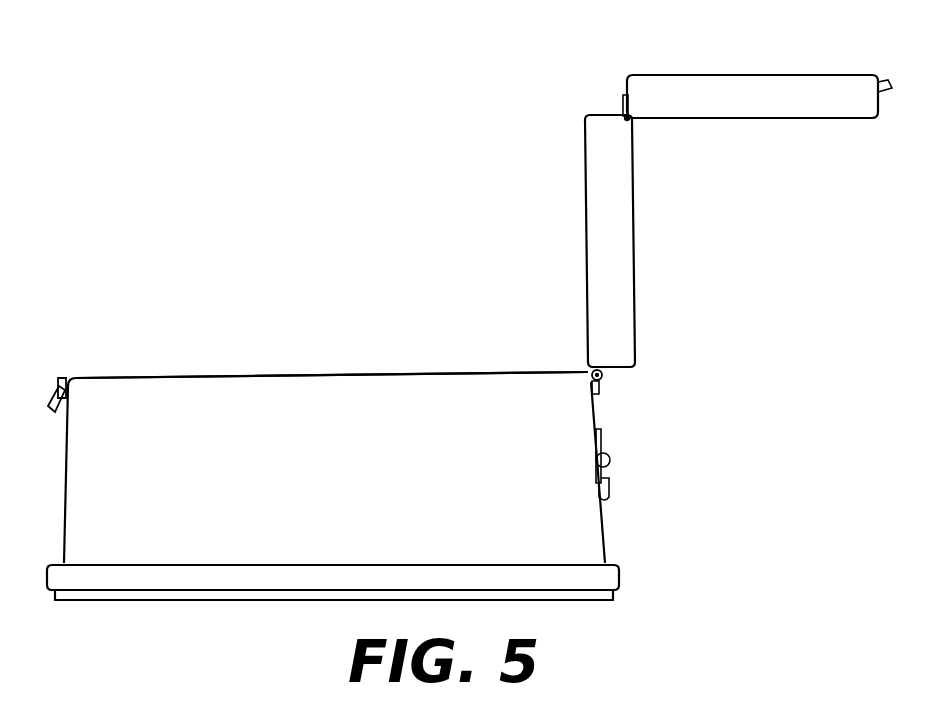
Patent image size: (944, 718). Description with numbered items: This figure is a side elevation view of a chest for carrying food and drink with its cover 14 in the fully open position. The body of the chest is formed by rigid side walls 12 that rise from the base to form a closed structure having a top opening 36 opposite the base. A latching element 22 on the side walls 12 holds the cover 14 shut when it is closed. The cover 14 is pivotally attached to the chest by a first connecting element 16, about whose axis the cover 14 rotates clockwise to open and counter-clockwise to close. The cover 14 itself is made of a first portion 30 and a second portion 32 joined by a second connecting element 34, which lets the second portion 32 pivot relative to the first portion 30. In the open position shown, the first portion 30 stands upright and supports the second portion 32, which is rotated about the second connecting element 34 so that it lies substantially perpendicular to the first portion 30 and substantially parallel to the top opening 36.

The side walls 12 is at (392, 457).
The cover 14 is at (738, 200).
The first connecting element 16 is at (602, 383).
The latching elements 22 is at (56, 387).
The first portion 30 is at (617, 203).
The second portion 32 is at (734, 104).
The second connecting elements 34 is at (628, 120).
The top opening 36 is at (229, 376).